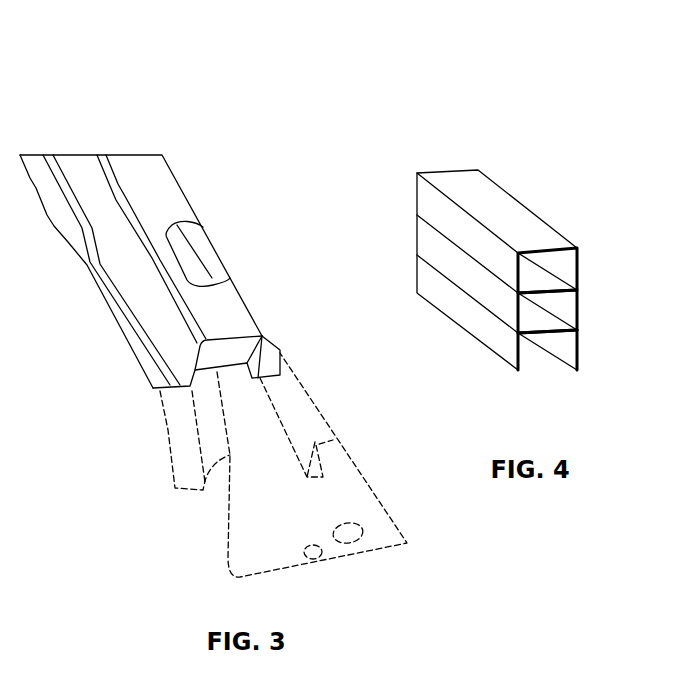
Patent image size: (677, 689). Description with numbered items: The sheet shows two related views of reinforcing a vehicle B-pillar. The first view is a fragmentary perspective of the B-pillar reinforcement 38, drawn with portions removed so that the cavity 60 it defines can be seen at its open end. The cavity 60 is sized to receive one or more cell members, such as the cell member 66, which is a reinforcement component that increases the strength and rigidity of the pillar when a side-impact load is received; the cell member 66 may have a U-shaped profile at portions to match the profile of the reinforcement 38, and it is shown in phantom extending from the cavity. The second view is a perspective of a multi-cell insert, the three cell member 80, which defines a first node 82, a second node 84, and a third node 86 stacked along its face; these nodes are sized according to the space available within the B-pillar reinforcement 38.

In FIG. 3, the B-pillar reinforcement 38 is at (168, 173).
In FIG. 3, the cavity 60 is at (208, 362).
In FIG. 3, the cell member 66 is at (238, 348).
In FIG. 4, the three cell member 80 is at (533, 241).
In FIG. 4, the first node 82 is at (578, 350).
In FIG. 4, the second node 84 is at (578, 310).
In FIG. 4, the third node 86 is at (580, 268).